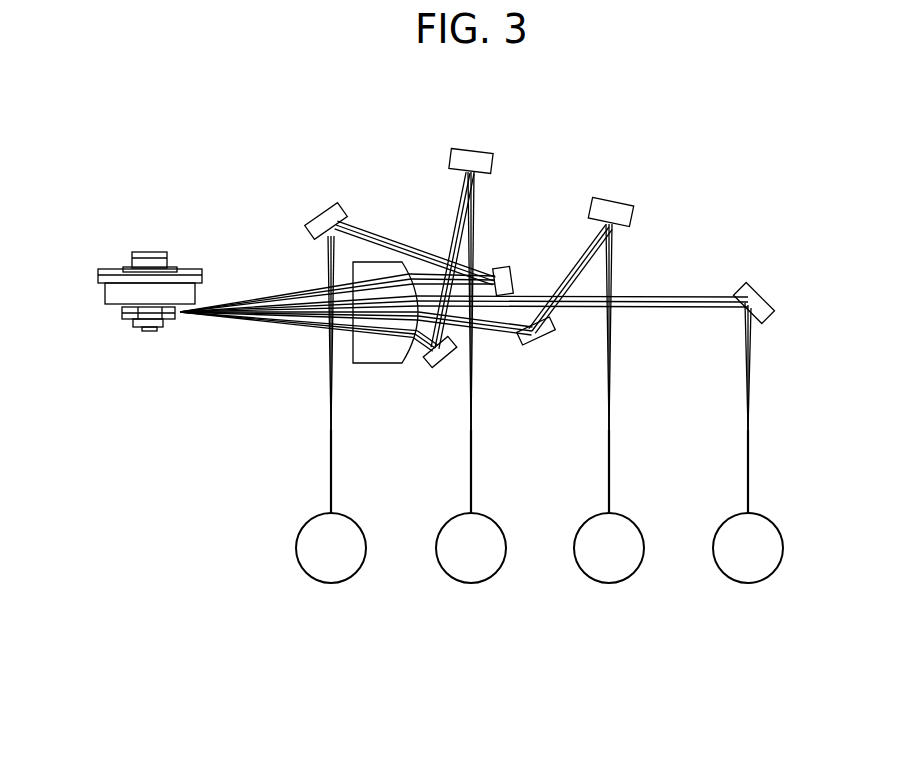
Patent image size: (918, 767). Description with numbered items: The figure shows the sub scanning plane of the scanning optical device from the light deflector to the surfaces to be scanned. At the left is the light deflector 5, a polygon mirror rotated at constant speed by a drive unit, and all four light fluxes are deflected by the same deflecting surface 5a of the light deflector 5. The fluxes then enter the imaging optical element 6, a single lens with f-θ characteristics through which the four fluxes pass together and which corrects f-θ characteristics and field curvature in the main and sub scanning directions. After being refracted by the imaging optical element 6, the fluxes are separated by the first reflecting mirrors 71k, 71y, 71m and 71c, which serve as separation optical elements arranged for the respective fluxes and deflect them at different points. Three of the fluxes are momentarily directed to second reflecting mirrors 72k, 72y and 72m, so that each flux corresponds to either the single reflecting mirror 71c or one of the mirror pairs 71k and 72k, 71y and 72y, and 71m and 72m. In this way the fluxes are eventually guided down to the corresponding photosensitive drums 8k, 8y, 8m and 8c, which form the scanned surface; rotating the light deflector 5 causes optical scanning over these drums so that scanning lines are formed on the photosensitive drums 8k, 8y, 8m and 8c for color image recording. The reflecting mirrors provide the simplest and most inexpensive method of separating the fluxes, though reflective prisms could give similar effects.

The light deflector 5 is at (117, 323).
The deflecting surface 5a is at (114, 322).
The imaging optical element 6 is at (371, 359).
The first reflecting mirror 71k is at (505, 268).
The first reflecting mirror 71y is at (427, 362).
The first reflecting mirror 71m is at (523, 343).
The first reflecting mirror 71c is at (763, 294).
The second reflecting mirror 72k is at (326, 214).
The second reflecting mirror 72y is at (471, 160).
The second reflecting mirror 72m is at (612, 208).
The photosensitive drum 8k is at (355, 533).
The photosensitive drum 8y is at (495, 533).
The photosensitive drum 8m is at (633, 533).
The photosensitive drum 8c is at (773, 533).